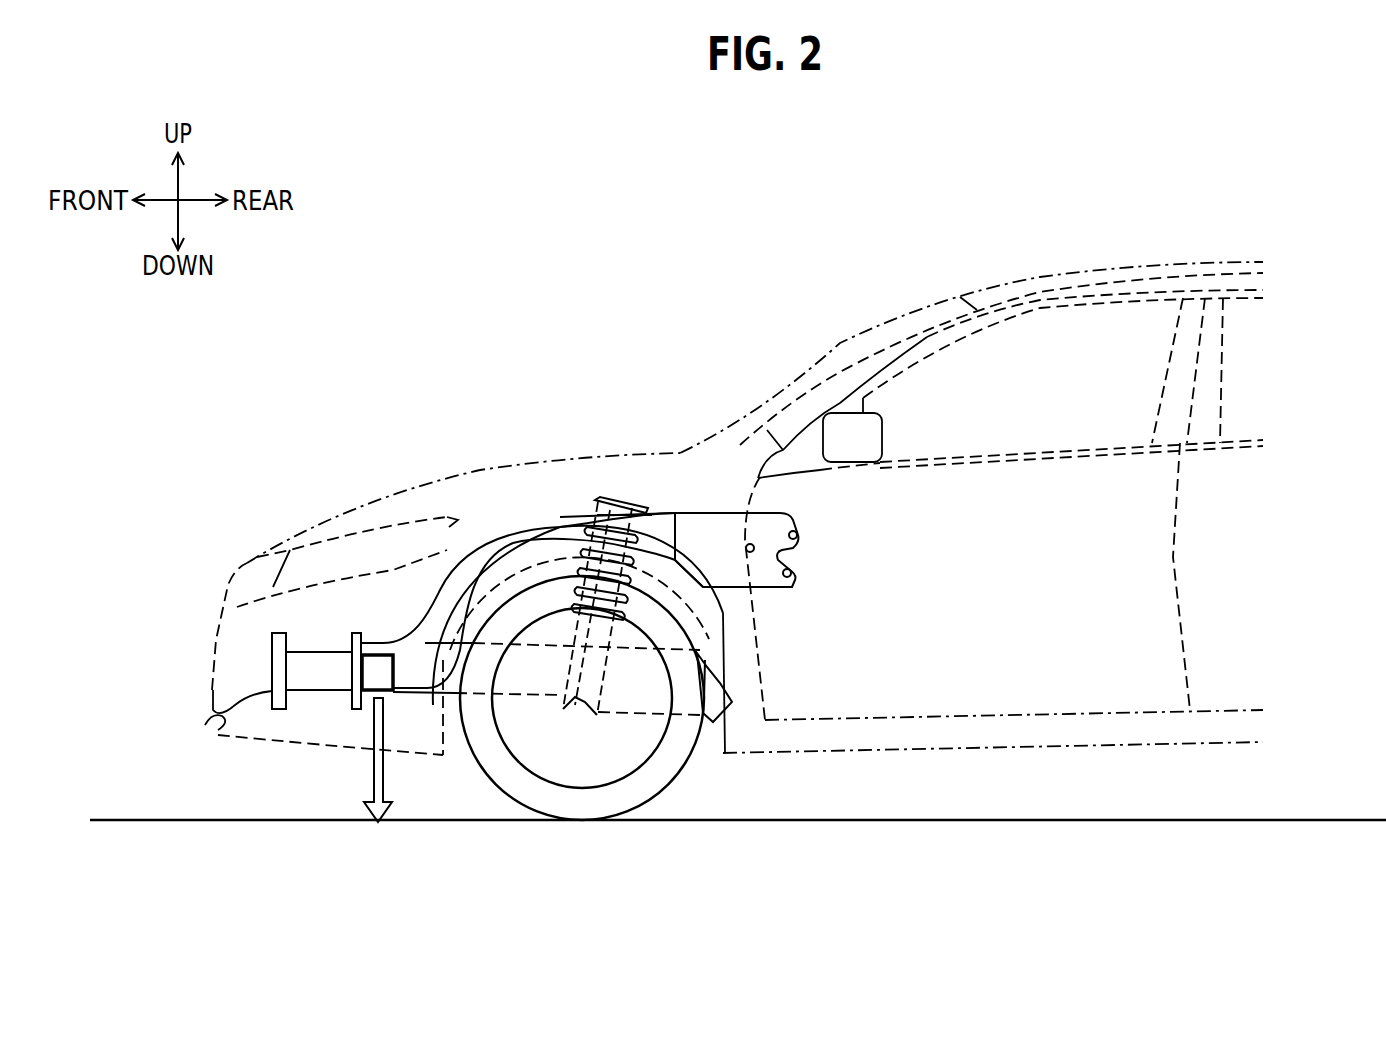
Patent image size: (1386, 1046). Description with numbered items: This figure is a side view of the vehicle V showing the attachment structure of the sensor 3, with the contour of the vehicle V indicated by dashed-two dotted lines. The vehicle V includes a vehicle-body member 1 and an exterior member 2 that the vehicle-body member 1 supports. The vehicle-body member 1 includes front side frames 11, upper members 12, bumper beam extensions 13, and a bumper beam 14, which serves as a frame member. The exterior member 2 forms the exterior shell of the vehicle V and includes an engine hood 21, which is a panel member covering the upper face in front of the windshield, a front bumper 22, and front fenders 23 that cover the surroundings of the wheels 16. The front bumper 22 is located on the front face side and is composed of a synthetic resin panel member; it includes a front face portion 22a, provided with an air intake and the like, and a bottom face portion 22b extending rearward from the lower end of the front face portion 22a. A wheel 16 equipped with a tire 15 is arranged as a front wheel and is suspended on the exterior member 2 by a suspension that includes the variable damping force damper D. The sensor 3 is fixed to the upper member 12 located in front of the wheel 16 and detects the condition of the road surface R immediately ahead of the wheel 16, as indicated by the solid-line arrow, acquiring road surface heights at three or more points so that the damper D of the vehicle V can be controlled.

The vehicle-body member 1 is at (578, 505).
The exterior member 2 is at (260, 695).
The sensor 3 is at (378, 671).
The front side frame 11 is at (416, 700).
The upper member 12 is at (450, 545).
The bumper beam extension 13 is at (283, 692).
The bumper beam 14 is at (212, 722).
The tire 15 is at (663, 792).
The wheel 16 is at (605, 790).
The engine hood 21 is at (465, 472).
The front bumper 22 is at (212, 636).
The front face portion 22a is at (212, 680).
The bottom face portion 22b is at (350, 755).
The front fender 23 is at (530, 497).
The damper D is at (630, 497).
The vehicle V is at (632, 312).
The road surface R is at (1293, 820).